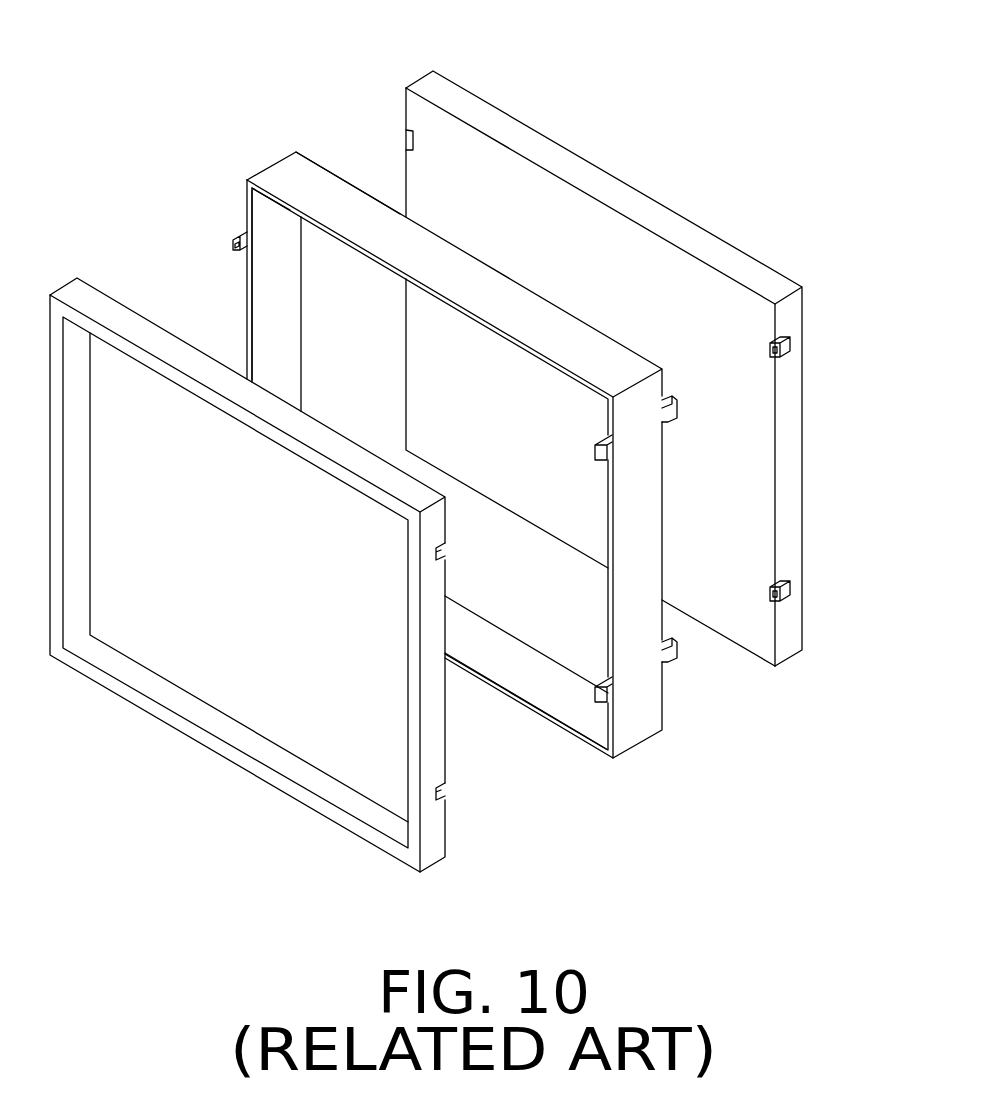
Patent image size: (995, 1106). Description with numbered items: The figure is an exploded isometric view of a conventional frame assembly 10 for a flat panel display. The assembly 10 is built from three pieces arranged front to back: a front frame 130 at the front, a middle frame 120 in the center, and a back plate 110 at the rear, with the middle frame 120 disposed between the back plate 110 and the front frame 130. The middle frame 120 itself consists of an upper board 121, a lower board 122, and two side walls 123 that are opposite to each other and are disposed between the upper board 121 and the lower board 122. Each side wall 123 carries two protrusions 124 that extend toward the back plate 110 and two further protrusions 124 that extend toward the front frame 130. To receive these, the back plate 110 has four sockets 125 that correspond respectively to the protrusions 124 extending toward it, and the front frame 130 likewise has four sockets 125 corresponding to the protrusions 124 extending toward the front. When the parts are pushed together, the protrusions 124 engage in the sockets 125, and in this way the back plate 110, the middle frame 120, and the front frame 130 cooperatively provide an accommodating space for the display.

The frame assembly 10 is at (599, 64).
The back plate 110 is at (790, 545).
The middle frame 120 is at (250, 162).
The upper board 121 is at (320, 185).
The lower board 122 is at (583, 710).
The side wall 123 is at (268, 279).
The protrusion 124 is at (232, 238).
The socket 125 is at (790, 590).
The front frame 130 is at (345, 825).